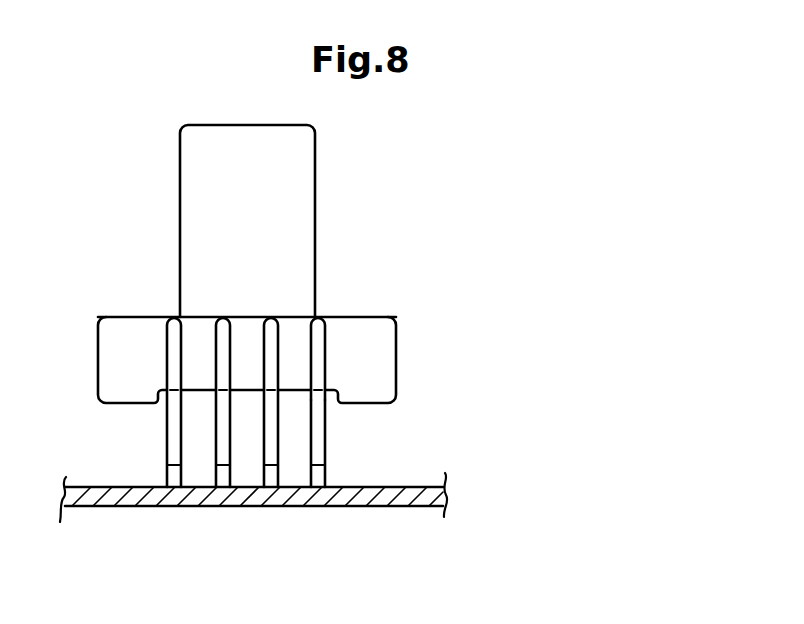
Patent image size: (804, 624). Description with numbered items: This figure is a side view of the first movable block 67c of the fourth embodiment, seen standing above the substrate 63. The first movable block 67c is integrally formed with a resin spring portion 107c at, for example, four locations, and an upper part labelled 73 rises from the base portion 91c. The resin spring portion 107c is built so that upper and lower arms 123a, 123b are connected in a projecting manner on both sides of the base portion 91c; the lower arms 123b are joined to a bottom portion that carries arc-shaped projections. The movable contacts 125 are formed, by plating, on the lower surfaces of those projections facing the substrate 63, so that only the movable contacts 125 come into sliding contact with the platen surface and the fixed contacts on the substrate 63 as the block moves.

The connector housing upper portion 73 is at (286, 182).
The first movable block 67c is at (383, 254).
The base portion 91c is at (380, 317).
The upper arm 123a is at (320, 350).
The lower arm 123b is at (320, 428).
The substrate 63 is at (110, 486).
The movable contact 125 is at (272, 480).
The resin spring portion 107c is at (323, 448).